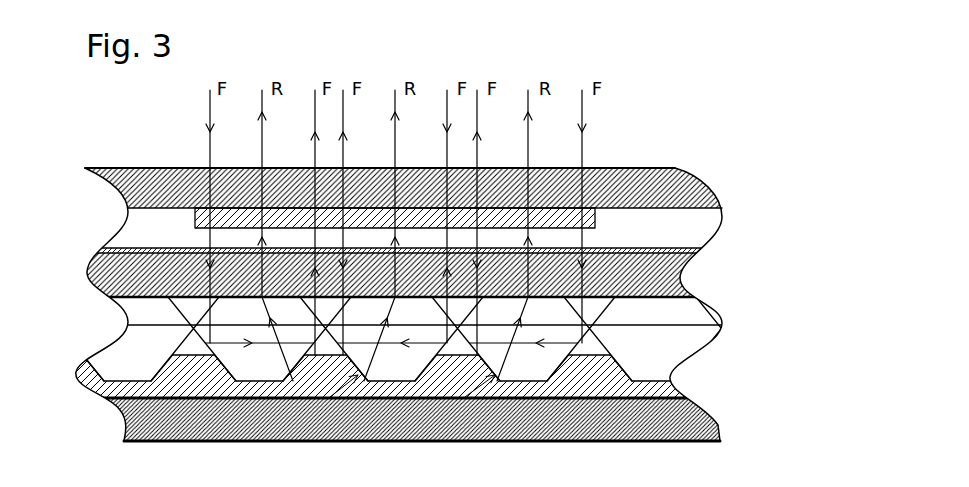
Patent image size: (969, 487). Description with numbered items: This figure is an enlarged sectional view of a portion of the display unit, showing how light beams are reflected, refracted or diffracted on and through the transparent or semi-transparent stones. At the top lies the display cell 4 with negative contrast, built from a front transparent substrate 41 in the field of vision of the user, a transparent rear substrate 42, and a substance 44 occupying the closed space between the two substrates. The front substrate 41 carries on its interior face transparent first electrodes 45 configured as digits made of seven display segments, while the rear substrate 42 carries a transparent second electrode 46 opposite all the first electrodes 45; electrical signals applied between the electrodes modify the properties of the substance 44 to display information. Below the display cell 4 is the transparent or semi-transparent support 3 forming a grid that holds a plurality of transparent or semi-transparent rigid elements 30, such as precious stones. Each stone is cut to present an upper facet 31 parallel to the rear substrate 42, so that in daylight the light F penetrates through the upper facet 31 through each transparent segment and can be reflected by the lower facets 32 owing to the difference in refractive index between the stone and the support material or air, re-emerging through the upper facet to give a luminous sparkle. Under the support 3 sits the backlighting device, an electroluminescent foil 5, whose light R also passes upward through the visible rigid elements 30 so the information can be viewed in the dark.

The support 3 is at (484, 365).
The display cell 4 is at (484, 193).
The electroluminescent foil 5 is at (683, 425).
The rigid elements 30 is at (647, 347).
The upper facet 31 is at (160, 297).
The lower facets 32 is at (230, 368).
The front transparent substrate 41 is at (627, 188).
The transparent rear substrate 42 is at (663, 283).
The substance 44 is at (670, 238).
The first electrodes 45 is at (555, 220).
The second electrode 46 is at (160, 248).